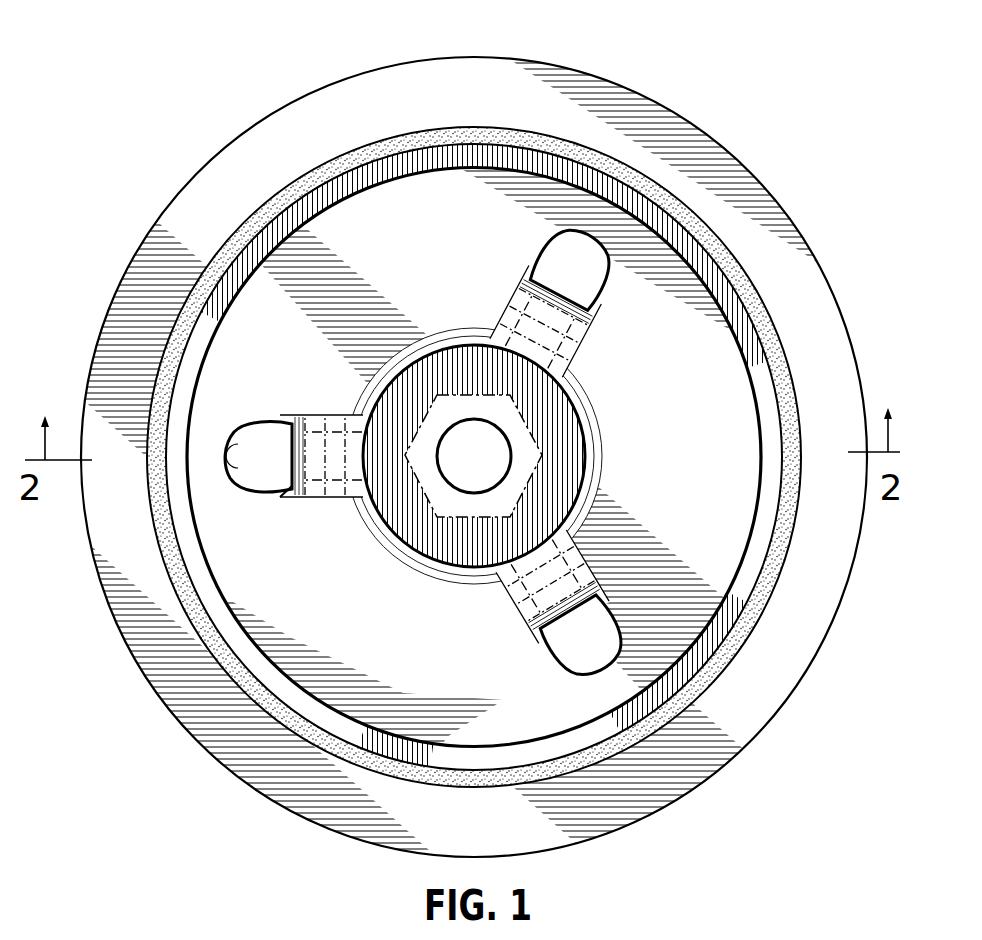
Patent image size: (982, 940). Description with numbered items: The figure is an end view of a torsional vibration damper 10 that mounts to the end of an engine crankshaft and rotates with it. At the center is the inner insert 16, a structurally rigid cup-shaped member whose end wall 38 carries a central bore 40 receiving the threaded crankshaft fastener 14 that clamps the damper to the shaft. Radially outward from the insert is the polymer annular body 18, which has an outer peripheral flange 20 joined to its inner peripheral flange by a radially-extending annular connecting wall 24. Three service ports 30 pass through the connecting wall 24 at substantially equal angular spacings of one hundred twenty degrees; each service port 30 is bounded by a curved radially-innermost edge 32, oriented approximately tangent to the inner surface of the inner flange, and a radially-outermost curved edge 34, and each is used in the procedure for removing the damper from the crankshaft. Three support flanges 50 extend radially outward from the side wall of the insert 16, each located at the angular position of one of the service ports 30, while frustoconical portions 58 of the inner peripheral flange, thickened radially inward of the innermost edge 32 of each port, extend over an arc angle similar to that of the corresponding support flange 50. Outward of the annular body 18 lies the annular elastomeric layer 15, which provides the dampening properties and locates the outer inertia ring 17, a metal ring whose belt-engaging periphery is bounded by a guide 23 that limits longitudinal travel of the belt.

The torsional vibration damper 10 is at (769, 132).
The threaded crankshaft fastener 14 is at (557, 440).
The annular elastomeric layer 15 is at (447, 128).
The inner insert 16 is at (411, 350).
The outer inertia ring 17 is at (519, 58).
The annular body 18 is at (723, 559).
The outer peripheral flange 20 is at (768, 390).
The guide 23 is at (667, 120).
The annular connecting wall 24 is at (334, 607).
The service port 30 is at (563, 260).
The curved radially-innermost edge 32 is at (289, 470).
The radially-outermost curved edge 34 is at (232, 444).
The end wall 38 is at (570, 478).
The bore 40 is at (493, 436).
The support flange 50 is at (512, 300).
The frustoconical portion 58 is at (585, 332).